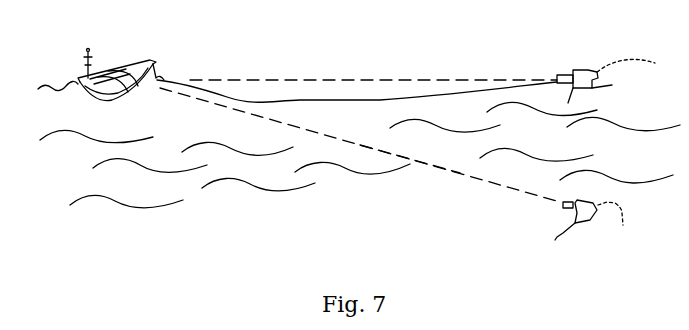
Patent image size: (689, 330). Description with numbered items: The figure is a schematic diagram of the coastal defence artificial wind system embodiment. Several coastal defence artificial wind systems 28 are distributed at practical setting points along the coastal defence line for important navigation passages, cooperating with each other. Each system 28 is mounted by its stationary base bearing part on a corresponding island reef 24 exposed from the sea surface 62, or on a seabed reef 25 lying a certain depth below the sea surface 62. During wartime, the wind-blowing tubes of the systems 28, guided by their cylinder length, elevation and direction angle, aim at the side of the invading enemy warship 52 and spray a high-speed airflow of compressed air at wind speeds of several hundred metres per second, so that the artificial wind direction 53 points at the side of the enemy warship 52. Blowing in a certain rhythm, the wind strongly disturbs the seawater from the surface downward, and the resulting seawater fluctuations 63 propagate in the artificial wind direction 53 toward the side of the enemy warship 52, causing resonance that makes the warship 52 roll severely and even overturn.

The enemy warship 52 is at (110, 67).
The seawater fluctuations 63 is at (159, 78).
The artificial wind direction 53 is at (408, 80).
The sea surface 62 is at (507, 148).
The coastal defence artificial wind system 28 is at (563, 73).
The island reef 24 is at (620, 67).
The seabed reef 25 is at (603, 218).